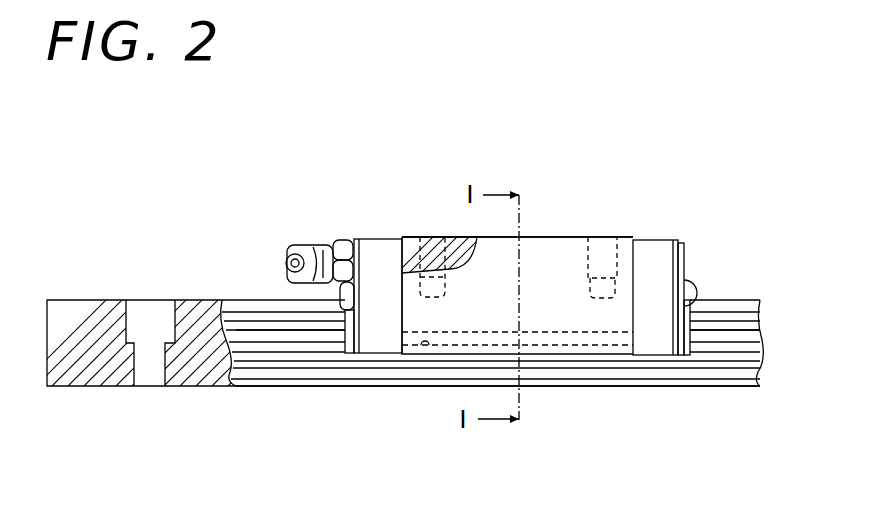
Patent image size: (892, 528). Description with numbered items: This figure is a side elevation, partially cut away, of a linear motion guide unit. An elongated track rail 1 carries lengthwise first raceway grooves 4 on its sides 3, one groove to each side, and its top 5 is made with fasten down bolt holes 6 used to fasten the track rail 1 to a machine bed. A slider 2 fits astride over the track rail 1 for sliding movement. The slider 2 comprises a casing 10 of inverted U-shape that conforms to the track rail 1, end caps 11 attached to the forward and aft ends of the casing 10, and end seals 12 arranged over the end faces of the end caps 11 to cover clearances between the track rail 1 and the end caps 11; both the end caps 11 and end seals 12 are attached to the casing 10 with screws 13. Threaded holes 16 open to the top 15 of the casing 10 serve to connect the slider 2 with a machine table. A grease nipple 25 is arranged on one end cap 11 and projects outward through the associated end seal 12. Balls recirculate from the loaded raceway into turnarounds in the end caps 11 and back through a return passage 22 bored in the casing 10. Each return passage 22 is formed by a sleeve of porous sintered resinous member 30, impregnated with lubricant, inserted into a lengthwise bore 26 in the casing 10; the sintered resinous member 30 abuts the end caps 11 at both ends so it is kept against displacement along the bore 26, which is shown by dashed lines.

The track rail 1 is at (276, 390).
The slider 2 is at (569, 236).
The sides of track rail 3 is at (262, 352).
The first raceway grooves 4 is at (268, 318).
The top of track rail 5 is at (191, 300).
The fasten down bolt holes 6 is at (141, 308).
The casing 10 is at (457, 238).
The end caps 11 is at (380, 258).
The end seals 12 is at (352, 248).
The screws 13 is at (347, 300).
The top of casing 15 is at (553, 236).
The threaded holes 16 is at (432, 238).
The return passage 22 is at (612, 340).
The grease nipple 25 is at (292, 252).
The lengthwise bores 26 is at (428, 352).
The sintered resinous member 30 is at (578, 352).